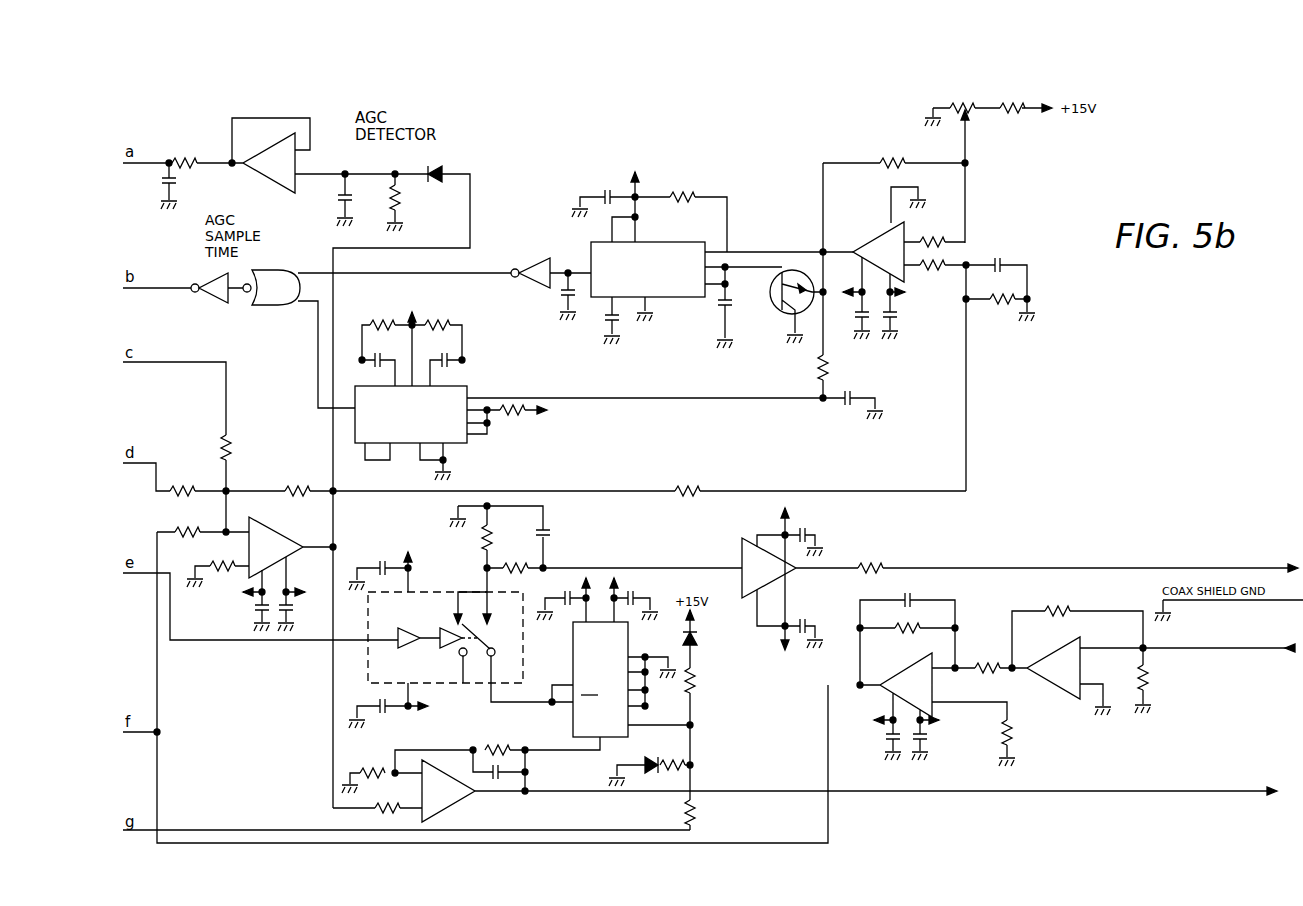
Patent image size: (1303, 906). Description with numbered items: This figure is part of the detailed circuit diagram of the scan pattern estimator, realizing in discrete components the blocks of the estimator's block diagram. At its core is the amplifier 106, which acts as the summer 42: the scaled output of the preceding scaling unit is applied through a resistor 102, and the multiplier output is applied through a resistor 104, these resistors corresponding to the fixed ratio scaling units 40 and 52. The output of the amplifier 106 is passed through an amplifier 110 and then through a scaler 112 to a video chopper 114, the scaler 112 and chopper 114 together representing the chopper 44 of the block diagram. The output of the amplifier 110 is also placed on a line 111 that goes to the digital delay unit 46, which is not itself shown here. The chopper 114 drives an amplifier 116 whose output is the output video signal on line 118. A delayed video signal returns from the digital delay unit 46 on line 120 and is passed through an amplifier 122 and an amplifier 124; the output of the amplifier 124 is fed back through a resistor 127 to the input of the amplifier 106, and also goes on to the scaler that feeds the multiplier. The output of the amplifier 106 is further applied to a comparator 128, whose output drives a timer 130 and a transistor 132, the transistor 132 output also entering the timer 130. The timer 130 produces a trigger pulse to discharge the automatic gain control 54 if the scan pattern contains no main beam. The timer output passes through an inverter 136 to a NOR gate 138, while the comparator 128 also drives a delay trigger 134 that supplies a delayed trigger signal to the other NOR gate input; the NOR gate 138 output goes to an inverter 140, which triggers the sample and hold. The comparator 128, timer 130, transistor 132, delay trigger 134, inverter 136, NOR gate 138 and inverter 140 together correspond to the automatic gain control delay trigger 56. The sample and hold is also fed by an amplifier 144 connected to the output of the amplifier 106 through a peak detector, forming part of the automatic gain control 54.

The automatic gain control 54 is at (187, 153).
The amplifier 144 is at (287, 155).
The inverter 140 is at (210, 300).
The NOR gate 138 is at (280, 306).
The inverter 136 is at (540, 262).
The timer 130 is at (660, 281).
The transistor 132 is at (774, 301).
The automatic gain control delay trigger 56 is at (669, 361).
The comparator 128 is at (884, 238).
The delay trigger 134 is at (425, 414).
The resistor 102 is at (236, 452).
The fixed ratio scaling unit 52 is at (172, 456).
The resistor 104 is at (180, 495).
The fixed ratio scaling unit 40 is at (286, 468).
The summer 42 is at (277, 518).
The amplifier 106 is at (290, 546).
The resistor 127 is at (207, 542).
The chopper 44 is at (579, 549).
The video chopper 114 is at (420, 617).
The scaler 112 is at (611, 662).
The amplifier 116 is at (743, 545).
The line 118 is at (1221, 568).
The amplifier 110 is at (464, 796).
The amplifier 124 is at (902, 690).
The digital delay unit 46 is at (987, 629).
The amplifier 122 is at (1061, 672).
The line 120 is at (1259, 652).
The line 111 is at (1123, 793).